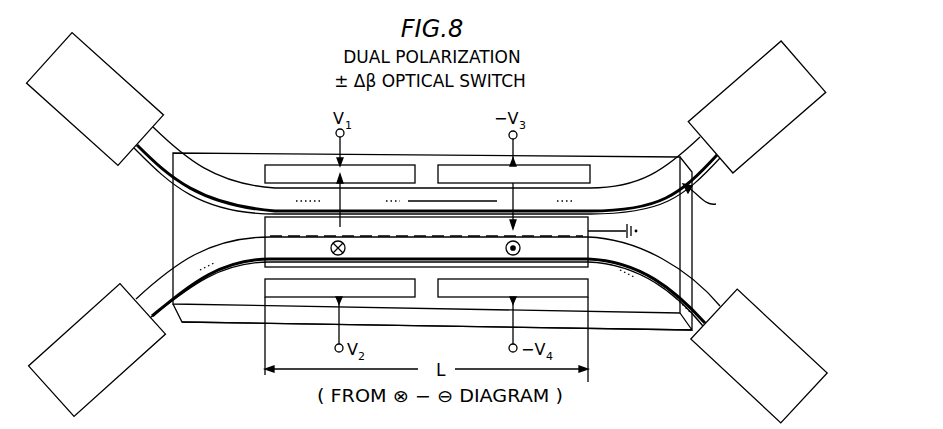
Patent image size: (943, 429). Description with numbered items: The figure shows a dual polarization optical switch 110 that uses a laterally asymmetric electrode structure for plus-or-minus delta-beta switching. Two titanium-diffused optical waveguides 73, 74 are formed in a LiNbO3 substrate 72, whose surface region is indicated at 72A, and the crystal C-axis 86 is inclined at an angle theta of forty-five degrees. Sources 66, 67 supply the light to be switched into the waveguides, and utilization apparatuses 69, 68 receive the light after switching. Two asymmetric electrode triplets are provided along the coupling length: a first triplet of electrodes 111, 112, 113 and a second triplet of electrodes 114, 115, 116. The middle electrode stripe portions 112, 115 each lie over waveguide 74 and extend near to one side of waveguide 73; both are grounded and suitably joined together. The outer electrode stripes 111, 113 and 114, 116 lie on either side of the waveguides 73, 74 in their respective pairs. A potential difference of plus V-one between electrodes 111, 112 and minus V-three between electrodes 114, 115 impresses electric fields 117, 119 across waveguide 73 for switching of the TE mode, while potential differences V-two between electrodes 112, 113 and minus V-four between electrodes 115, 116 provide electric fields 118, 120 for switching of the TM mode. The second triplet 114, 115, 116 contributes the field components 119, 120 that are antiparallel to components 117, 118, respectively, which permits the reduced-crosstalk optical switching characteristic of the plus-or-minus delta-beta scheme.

The source 66 is at (124, 73).
The source 67 is at (124, 378).
The utilization apparatus 68 is at (745, 394).
The utilization apparatus 69 is at (731, 84).
The substrate 72 is at (633, 330).
The substrate surface 72A is at (657, 313).
The waveguide 73 is at (162, 146).
The waveguide 74 is at (163, 325).
The C-axis 86 is at (739, 210).
The optical switch 110 is at (241, 98).
The outer electrode stripe 111 is at (283, 172).
The middle electrode stripe portion 112 is at (270, 226).
The outer electrode stripe 113 is at (266, 284).
The outer electrode stripe 114 is at (570, 176).
The middle electrode stripe portion 115 is at (629, 232).
The outer electrode stripe 116 is at (590, 294).
The electric field 117 is at (343, 201).
The electric field 118 is at (346, 248).
The electric field 119 is at (516, 201).
The electric field 120 is at (521, 248).